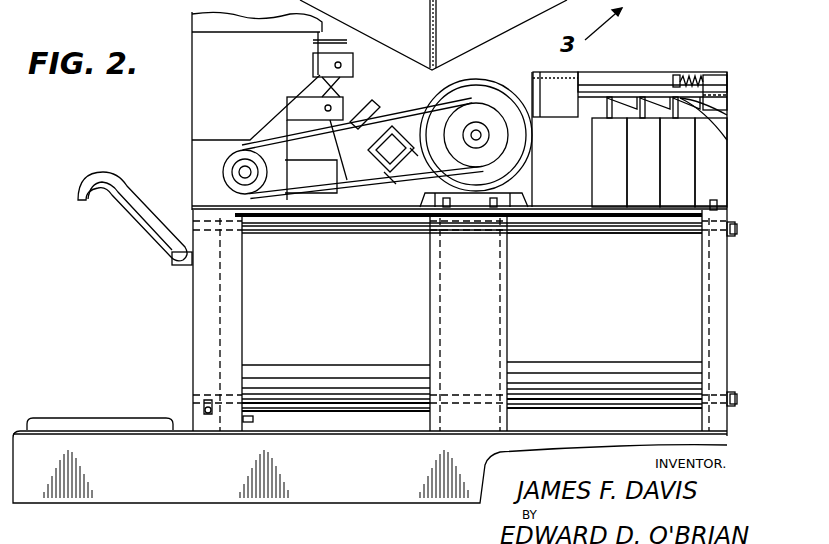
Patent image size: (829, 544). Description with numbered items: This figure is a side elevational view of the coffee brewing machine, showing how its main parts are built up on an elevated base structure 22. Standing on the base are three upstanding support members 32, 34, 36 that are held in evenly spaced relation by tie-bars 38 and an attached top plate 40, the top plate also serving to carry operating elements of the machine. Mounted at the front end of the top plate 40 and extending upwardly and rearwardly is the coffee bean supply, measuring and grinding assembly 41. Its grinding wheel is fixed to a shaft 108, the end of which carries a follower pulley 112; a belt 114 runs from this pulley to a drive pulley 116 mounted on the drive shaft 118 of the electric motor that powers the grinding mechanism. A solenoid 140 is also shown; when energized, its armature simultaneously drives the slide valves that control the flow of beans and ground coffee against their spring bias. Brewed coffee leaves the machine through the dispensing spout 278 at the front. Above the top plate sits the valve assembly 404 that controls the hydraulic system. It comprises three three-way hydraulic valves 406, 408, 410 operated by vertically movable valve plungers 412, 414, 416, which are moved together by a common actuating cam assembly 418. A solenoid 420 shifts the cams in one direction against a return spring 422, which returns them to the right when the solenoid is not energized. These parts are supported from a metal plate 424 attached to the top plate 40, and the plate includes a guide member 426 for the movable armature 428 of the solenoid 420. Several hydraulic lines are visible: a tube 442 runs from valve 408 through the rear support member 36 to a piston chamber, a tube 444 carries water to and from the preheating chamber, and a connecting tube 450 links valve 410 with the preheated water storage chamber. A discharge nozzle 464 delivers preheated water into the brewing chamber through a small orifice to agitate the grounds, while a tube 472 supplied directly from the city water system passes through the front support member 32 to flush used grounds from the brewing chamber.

The elevated base structure 22 is at (273, 492).
The upstanding support member 32 is at (224, 286).
The upstanding support member 34 is at (484, 304).
The upstanding support member 36 is at (718, 296).
The tie-bars 38 is at (587, 234).
The top plate 40 is at (660, 218).
The coffee bean supply, measuring and grinding assembly 41 is at (190, 86).
The shaft 108 is at (240, 166).
The follower pulley 112 is at (238, 172).
The belt 114 is at (385, 127).
The drive pulley 116 is at (490, 118).
The drive shaft 118 is at (476, 130).
The solenoid 140 is at (410, 140).
The dispensing spout 278 is at (152, 224).
The valve assembly 404 is at (700, 181).
The three-way hydraulic valve 406 is at (606, 150).
The three-way hydraulic valve 408 is at (638, 164).
The three-way hydraulic valve 410 is at (680, 158).
The valve plunger 412 is at (604, 108).
The valve plunger 414 is at (646, 108).
The valve plunger 416 is at (690, 103).
The actuating cam assembly 418 is at (608, 92).
The solenoid 420 is at (565, 80).
The return spring 422 is at (695, 70).
The metal plate 424 is at (714, 119).
The guide member 426 is at (727, 84).
The movable armature 428 is at (638, 92).
The tube 442 is at (719, 206).
The tube 444 is at (494, 208).
The connecting tube 450 is at (446, 208).
The discharge nozzle 464 is at (254, 420).
The tube 472 is at (203, 407).